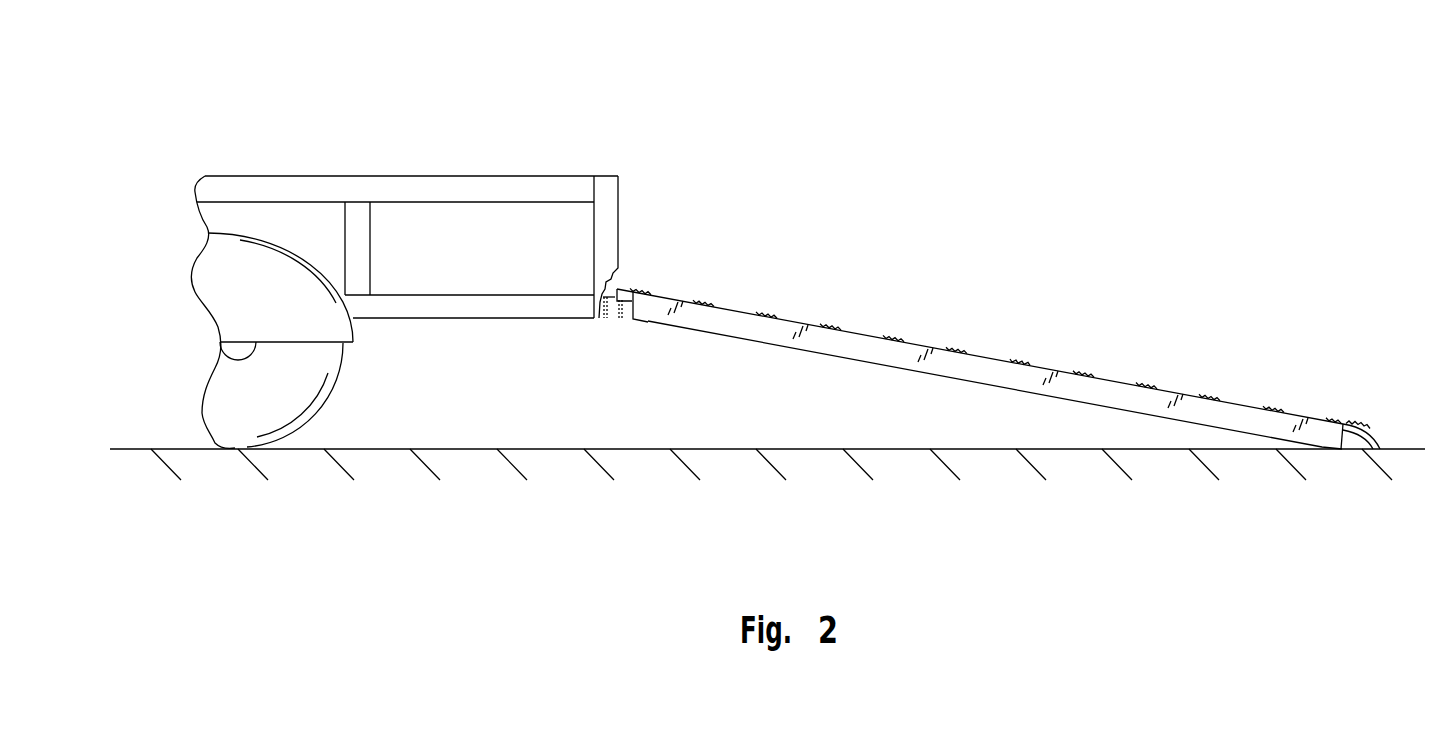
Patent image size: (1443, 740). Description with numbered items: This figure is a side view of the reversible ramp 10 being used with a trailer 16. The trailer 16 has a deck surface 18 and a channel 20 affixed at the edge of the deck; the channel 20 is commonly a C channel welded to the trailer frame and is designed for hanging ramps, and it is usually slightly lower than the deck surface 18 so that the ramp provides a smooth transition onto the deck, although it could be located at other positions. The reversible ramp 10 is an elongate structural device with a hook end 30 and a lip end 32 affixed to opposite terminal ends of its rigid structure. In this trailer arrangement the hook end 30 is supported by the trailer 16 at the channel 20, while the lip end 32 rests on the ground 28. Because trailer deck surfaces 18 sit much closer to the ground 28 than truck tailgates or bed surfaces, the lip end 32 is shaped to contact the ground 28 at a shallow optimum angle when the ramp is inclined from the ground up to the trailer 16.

The reversible ramp 10 is at (997, 297).
The trailer 16 is at (437, 168).
The deck surface 18 is at (427, 295).
The channel 20 is at (615, 317).
The ground 28 is at (792, 448).
The hook end 30 is at (638, 287).
The lip end 32 is at (1363, 413).